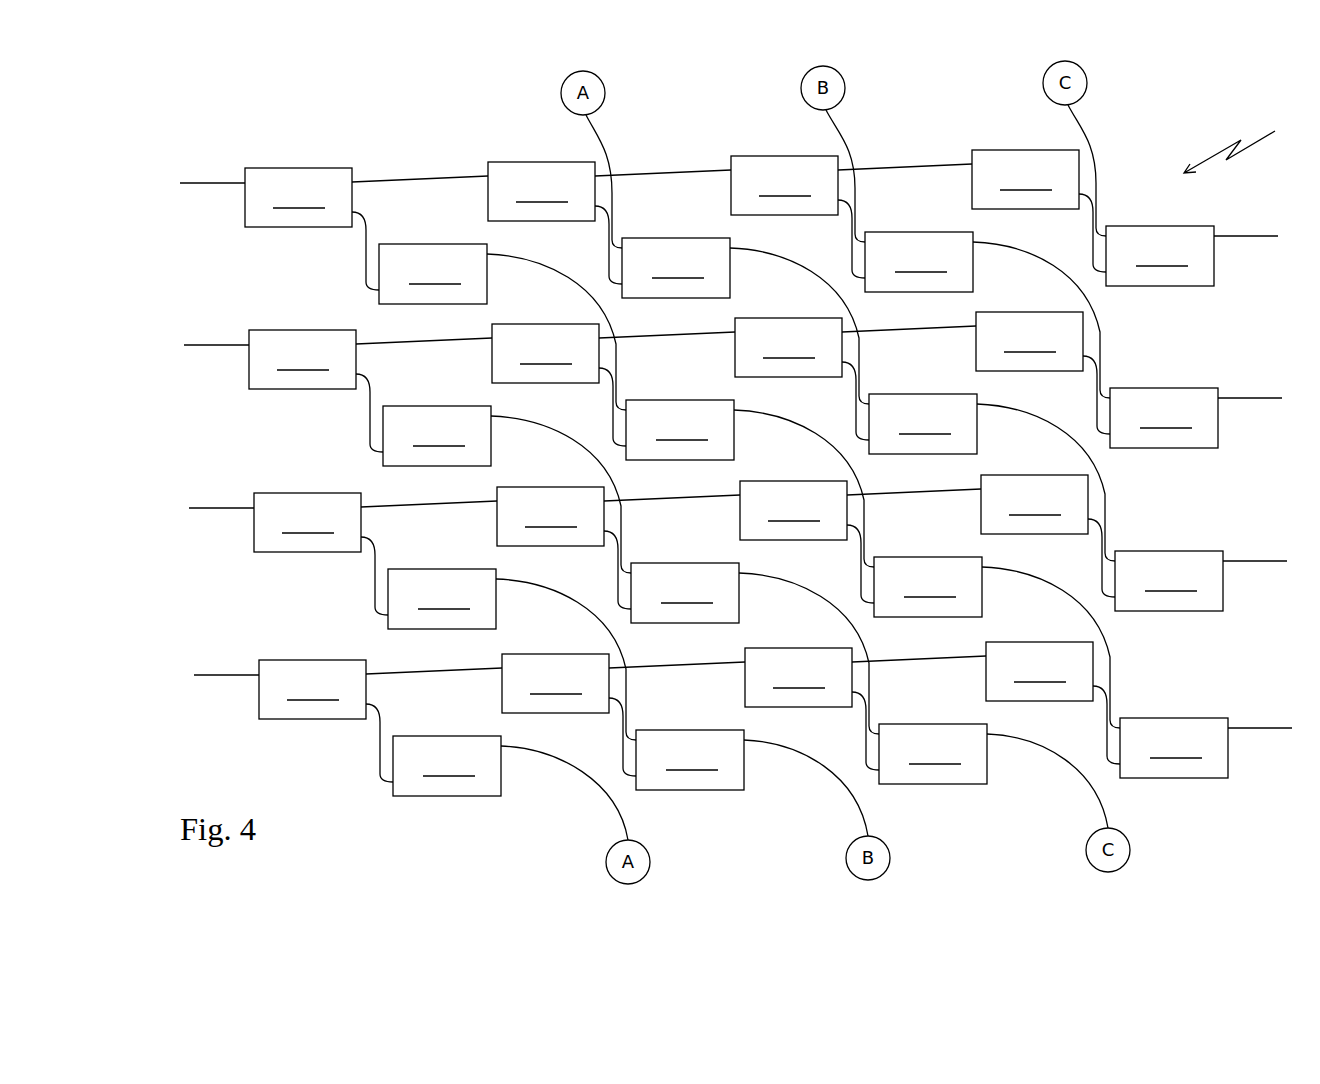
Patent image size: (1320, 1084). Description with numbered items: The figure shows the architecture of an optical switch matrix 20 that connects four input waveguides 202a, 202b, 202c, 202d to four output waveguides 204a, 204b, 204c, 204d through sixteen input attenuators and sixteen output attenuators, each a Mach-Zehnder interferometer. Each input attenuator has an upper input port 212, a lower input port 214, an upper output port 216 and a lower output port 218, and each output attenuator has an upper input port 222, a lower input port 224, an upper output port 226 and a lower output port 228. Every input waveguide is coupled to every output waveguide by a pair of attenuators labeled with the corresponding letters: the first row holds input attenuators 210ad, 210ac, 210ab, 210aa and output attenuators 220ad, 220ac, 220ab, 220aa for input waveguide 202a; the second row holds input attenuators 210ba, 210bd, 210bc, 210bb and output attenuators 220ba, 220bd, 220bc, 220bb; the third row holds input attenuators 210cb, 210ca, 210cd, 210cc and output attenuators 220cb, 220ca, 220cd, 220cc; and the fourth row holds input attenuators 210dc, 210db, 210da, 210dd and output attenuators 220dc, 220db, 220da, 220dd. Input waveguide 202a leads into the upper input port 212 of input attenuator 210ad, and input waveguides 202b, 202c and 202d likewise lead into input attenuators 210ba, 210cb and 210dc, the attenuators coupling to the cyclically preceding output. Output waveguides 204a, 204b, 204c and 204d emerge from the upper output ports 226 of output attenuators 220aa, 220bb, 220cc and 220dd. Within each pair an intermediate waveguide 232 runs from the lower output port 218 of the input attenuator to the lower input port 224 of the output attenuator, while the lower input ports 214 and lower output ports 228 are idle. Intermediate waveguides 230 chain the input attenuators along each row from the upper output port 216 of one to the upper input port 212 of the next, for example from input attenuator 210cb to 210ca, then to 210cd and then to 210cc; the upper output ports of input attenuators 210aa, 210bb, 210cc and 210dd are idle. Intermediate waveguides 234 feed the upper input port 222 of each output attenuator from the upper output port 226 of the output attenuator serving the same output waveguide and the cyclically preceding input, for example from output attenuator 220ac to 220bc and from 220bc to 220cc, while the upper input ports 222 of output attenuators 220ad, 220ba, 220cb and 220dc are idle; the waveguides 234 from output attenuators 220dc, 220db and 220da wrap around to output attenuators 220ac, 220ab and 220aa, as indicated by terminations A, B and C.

The switching network 20 is at (1229, 143).
The input waveguide 202a is at (200, 181).
The input waveguide 202b is at (204, 343).
The input waveguide 202c is at (209, 506).
The input waveguide 202d is at (214, 673).
The output waveguide 204a is at (1276, 238).
The output waveguide 204b is at (1280, 400).
The output waveguide 204c is at (1285, 563).
The output waveguide 204d is at (1290, 730).
The input attenuator 210ad is at (298, 197).
The input attenuator 210ac is at (541, 191).
The input attenuator 210ab is at (784, 185).
The input attenuator 210aa is at (1025, 179).
The input attenuator 210ba is at (302, 359).
The input attenuator 210bd is at (545, 353).
The input attenuator 210bc is at (788, 347).
The input attenuator 210bb is at (1029, 341).
The input attenuator 210cb is at (307, 522).
The input attenuator 210ca is at (550, 516).
The input attenuator 210cd is at (793, 510).
The input attenuator 210cc is at (1034, 504).
The input attenuator 210dc is at (312, 689).
The input attenuator 210db is at (555, 683).
The input attenuator 210da is at (798, 677).
The input attenuator 210dd is at (1039, 671).
The output attenuator 220ad is at (433, 274).
The output attenuator 220ac is at (676, 268).
The output attenuator 220ab is at (919, 262).
The output attenuator 220aa is at (1160, 256).
The output attenuator 220ba is at (437, 436).
The output attenuator 220bd is at (680, 430).
The output attenuator 220bc is at (923, 424).
The output attenuator 220bb is at (1164, 418).
The output attenuator 220cb is at (442, 599).
The output attenuator 220ca is at (685, 593).
The output attenuator 220cd is at (928, 587).
The output attenuator 220cc is at (1169, 581).
The output attenuator 220dc is at (447, 766).
The output attenuator 220db is at (690, 760).
The output attenuator 220da is at (933, 754).
The output attenuator 220dd is at (1174, 748).
The upper input port 212 is at (637, 417).
The lower input port 214 is at (218, 212).
The upper output port 216 is at (1162, 656).
The lower output port 218 is at (703, 452).
The upper input port 222 is at (370, 254).
The lower input port 224 is at (771, 527).
The upper output port 226 is at (838, 492).
The lower output port 228 is at (497, 290).
The intermediate waveguide 230 is at (435, 181).
The intermediate waveguide 232 is at (366, 248).
The intermediate waveguide 234 is at (530, 258).